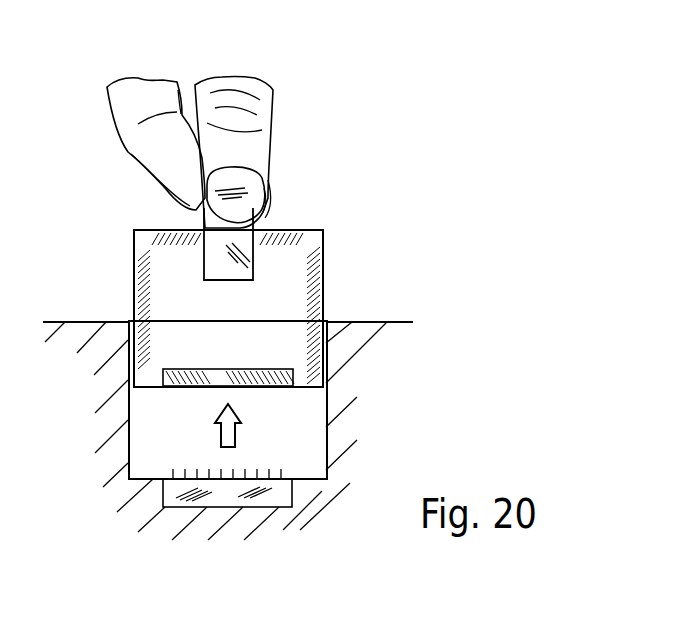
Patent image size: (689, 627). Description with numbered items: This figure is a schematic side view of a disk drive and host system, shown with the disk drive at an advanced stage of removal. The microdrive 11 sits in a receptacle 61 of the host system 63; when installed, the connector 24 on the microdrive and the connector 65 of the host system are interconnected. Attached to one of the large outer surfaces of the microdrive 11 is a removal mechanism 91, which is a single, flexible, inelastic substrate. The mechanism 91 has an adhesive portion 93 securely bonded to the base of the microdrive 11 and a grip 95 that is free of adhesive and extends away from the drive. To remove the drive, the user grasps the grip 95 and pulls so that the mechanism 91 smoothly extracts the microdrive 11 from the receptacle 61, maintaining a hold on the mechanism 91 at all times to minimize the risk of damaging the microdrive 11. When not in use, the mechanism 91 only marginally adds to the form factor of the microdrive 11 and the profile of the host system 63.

The microdrive 11 is at (222, 317).
The connector 24 is at (213, 375).
The receptacle 61 is at (131, 410).
The host system 63 is at (86, 330).
The connector 65 is at (287, 490).
The mechanism 91 is at (178, 218).
The adhesive portion 93 is at (250, 257).
The grip 95 is at (255, 224).